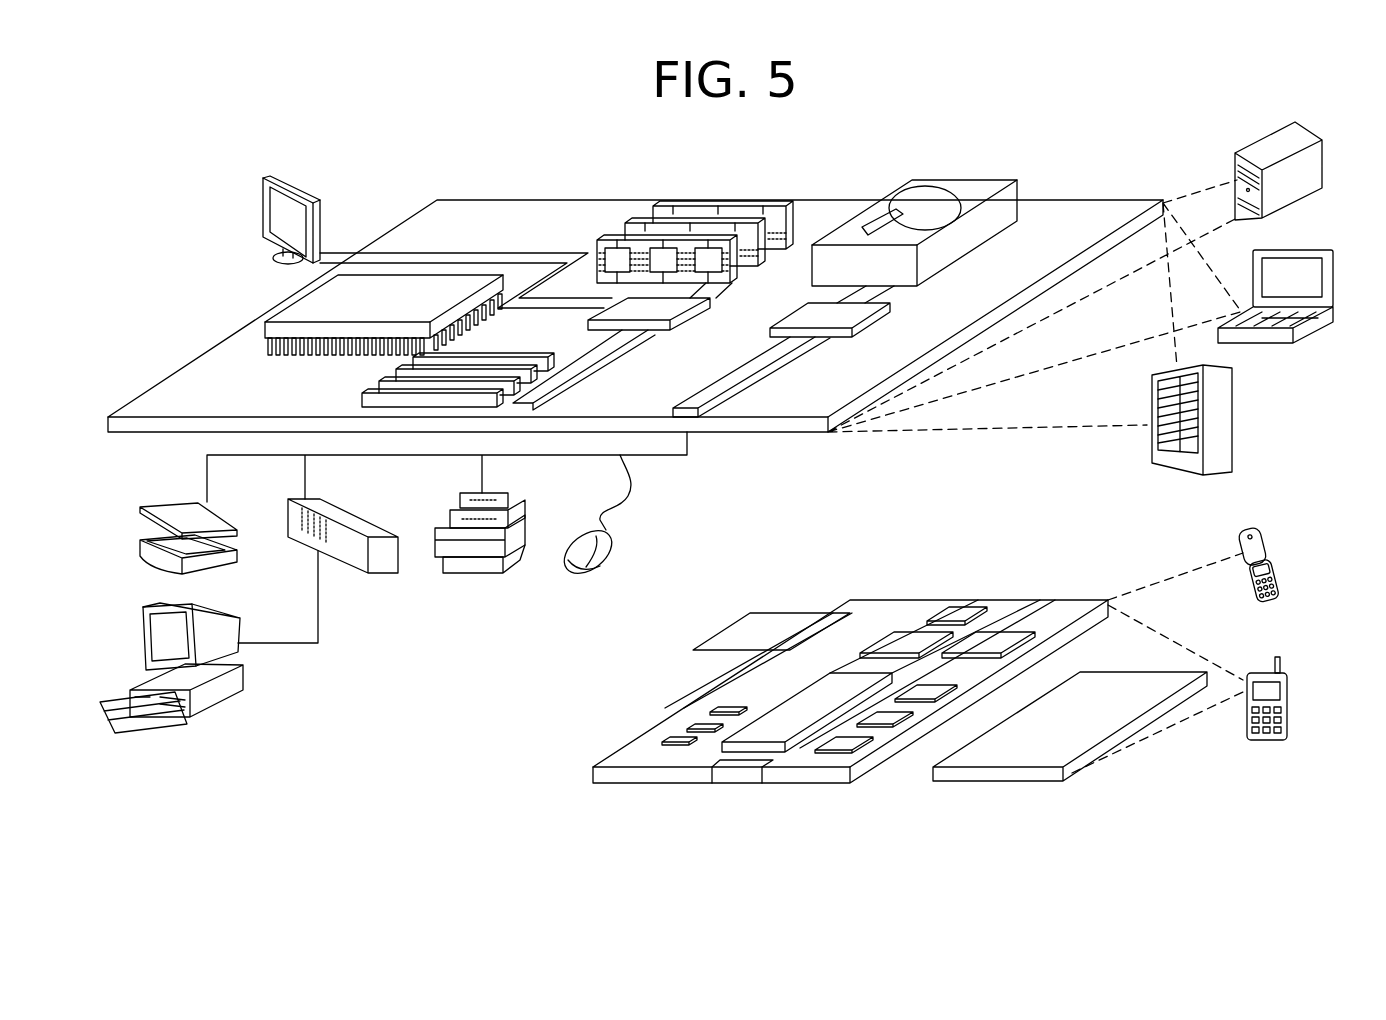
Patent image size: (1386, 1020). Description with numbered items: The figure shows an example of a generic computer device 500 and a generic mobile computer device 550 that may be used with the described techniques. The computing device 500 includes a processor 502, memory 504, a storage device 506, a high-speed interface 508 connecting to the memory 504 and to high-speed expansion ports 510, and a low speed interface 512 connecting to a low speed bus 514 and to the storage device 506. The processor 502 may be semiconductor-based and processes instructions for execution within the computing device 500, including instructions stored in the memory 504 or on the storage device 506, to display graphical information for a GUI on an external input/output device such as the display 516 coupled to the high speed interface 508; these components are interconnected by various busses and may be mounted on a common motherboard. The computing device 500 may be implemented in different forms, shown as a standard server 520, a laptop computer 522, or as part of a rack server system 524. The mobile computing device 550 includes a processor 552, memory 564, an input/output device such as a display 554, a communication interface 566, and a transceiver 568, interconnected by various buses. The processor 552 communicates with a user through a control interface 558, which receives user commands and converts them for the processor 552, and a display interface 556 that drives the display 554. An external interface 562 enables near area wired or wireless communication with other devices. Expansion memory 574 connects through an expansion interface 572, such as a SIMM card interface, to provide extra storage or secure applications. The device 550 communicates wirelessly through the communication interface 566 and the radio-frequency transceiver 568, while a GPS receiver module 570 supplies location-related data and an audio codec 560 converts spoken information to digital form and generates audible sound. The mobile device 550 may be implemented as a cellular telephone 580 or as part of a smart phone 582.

The computing device 500 is at (389, 146).
The processor 502 is at (291, 302).
The memory 504 is at (729, 197).
The storage device 506 is at (956, 180).
The high-speed interface 508 is at (663, 307).
The high-speed expansion ports 510 is at (388, 382).
The low speed interface 512 is at (804, 312).
The low speed bus 514 is at (694, 398).
The display 516 is at (273, 172).
The standard server 520 is at (1256, 148).
The laptop computer 522 is at (1308, 247).
The rack server system 524 is at (1235, 420).
The mobile computer device 550 is at (547, 791).
The processor 552 is at (775, 720).
The display 554 is at (1107, 688).
The display interface 556 is at (855, 740).
The control interface 558 is at (893, 718).
The audio codec 560 is at (932, 688).
The external interface 562 is at (742, 768).
The memory 564 is at (690, 724).
The communication interface 566 is at (903, 632).
The transceiver 568 is at (997, 634).
The GPS receiver module 570 is at (955, 611).
The expansion interface 572 is at (832, 612).
The expansion memory 574 is at (750, 612).
The cellular telephone 580 is at (1253, 526).
The smart phone 582 is at (1263, 672).